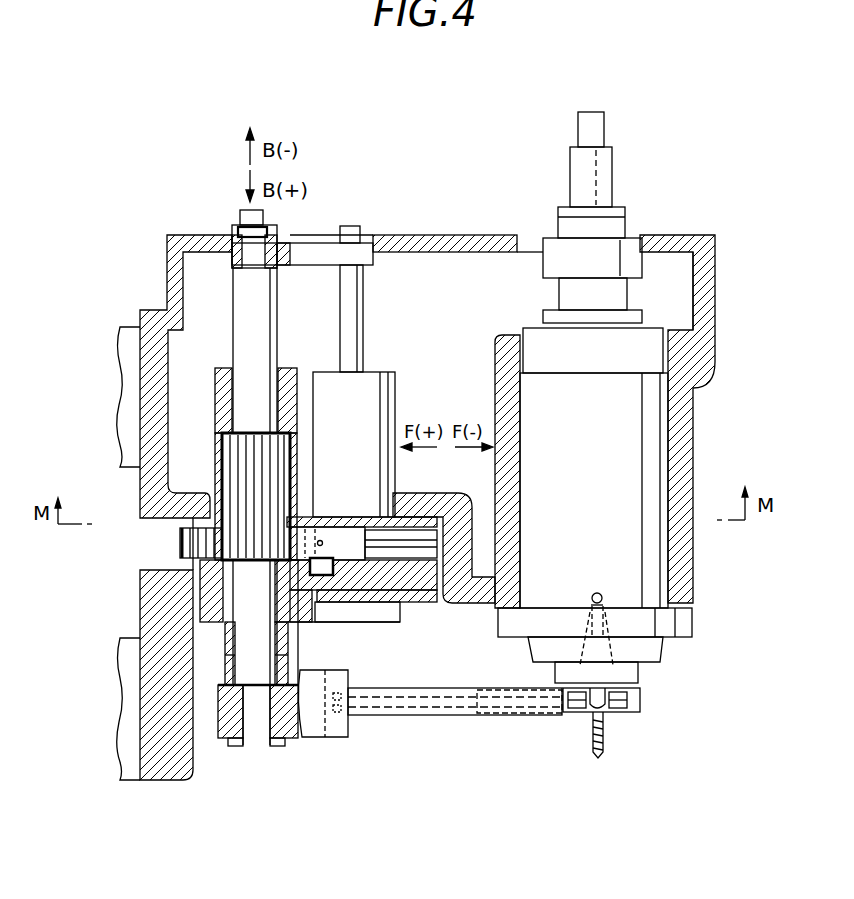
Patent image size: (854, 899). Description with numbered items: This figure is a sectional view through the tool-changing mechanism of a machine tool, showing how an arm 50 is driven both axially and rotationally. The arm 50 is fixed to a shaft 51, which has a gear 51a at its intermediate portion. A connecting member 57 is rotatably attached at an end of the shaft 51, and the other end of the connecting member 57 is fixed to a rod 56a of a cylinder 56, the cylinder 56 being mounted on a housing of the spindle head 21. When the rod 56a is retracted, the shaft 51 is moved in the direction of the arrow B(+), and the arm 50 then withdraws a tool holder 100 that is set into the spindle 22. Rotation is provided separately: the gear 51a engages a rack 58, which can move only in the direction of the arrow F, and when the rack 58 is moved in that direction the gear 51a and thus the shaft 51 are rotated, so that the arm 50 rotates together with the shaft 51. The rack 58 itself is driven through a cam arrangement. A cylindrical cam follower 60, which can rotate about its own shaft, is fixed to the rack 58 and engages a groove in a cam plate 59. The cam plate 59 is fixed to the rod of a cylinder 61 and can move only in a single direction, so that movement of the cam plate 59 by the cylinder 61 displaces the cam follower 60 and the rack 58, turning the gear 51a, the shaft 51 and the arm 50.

The spindle head 21 is at (146, 511).
The spindle 22 is at (516, 638).
The arm 50 is at (355, 737).
The shaft 51 is at (266, 608).
The gear 51a is at (245, 458).
The cylinder 56 is at (386, 394).
The rod 56a is at (364, 292).
The connecting member 57 is at (370, 248).
The rack 58 is at (180, 548).
The cam plate 59 is at (410, 600).
The cam follower 60 is at (328, 578).
The cylinder 61 is at (392, 622).
The tool holder 100 is at (640, 640).